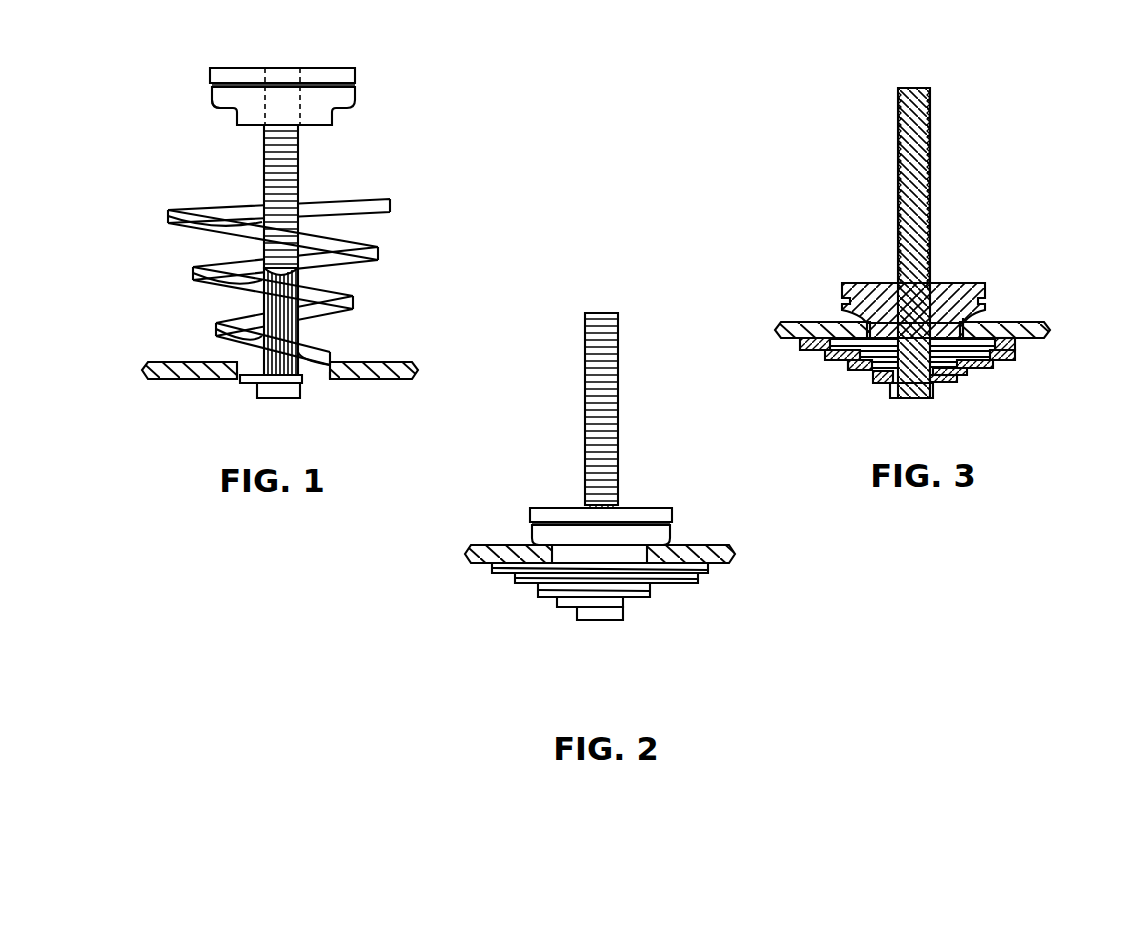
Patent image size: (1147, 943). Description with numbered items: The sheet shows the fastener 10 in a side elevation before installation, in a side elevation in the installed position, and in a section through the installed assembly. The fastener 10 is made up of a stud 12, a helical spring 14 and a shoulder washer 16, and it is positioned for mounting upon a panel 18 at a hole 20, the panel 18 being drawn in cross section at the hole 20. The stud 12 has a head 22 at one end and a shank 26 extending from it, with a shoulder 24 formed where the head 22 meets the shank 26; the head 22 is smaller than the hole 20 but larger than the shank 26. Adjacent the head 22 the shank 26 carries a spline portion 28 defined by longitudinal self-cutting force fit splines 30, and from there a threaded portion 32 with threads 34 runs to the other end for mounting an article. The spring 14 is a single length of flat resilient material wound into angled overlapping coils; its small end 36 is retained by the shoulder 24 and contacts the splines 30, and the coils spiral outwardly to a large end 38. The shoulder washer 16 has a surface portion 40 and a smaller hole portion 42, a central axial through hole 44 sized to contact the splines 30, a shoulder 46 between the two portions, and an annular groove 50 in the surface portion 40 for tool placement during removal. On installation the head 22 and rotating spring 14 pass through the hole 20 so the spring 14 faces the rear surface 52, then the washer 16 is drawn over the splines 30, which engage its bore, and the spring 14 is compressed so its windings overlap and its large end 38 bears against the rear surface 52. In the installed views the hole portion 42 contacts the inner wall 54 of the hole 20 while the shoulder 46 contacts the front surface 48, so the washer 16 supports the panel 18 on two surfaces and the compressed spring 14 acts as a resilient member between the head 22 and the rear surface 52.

In FIG. 1, the fastener 10 is at (412, 78).
In FIG. 1, the stud 12 is at (329, 191).
In FIG. 2, the stud 12 is at (612, 308).
In FIG. 3, the stud 12 is at (961, 229).
In FIG. 1, the spring 14 is at (272, 257).
In FIG. 2, the spring 14 is at (579, 609).
In FIG. 3, the spring 14 is at (818, 356).
In FIG. 1, the shoulder washer 16 is at (285, 91).
In FIG. 2, the shoulder washer 16 is at (674, 512).
In FIG. 3, the shoulder washer 16 is at (948, 278).
In FIG. 1, the panel 18 is at (305, 385).
In FIG. 2, the panel 18 is at (739, 553).
In FIG. 3, the panel 18 is at (912, 341).
In FIG. 1, the hole 20 is at (314, 379).
In FIG. 3, the hole 20 is at (848, 362).
In FIG. 1, the head 22 is at (276, 396).
In FIG. 2, the head 22 is at (576, 614).
In FIG. 3, the head 22 is at (912, 398).
In FIG. 1, the shoulder 24 is at (258, 387).
In FIG. 3, the shoulder 24 is at (940, 384).
In FIG. 1, the shank 26 is at (350, 270).
In FIG. 1, the spline portion 28 is at (300, 322).
In FIG. 1, the splines 30 is at (268, 300).
In FIG. 1, the threaded portion 32 is at (262, 150).
In FIG. 1, the threads 34 is at (300, 170).
In FIG. 3, the threads 34 is at (932, 166).
In FIG. 1, the small end 36 is at (238, 381).
In FIG. 2, the small end 36 is at (560, 607).
In FIG. 3, the small end 36 is at (892, 385).
In FIG. 1, the large end 38 is at (170, 202).
In FIG. 2, the large end 38 is at (490, 568).
In FIG. 3, the large end 38 is at (1022, 350).
In FIG. 1, the surface portion 40 is at (216, 88).
In FIG. 1, the hole portion 42 is at (238, 113).
In FIG. 3, the hole portion 42 is at (955, 330).
In FIG. 1, the central axial through hole 44 is at (283, 67).
In FIG. 1, the shoulder 46 is at (226, 108).
In FIG. 3, the shoulder 46 is at (983, 320).
In FIG. 1, the front surface 48 is at (395, 362).
In FIG. 3, the front surface 48 is at (1040, 333).
In FIG. 1, the annular groove 50 is at (358, 86).
In FIG. 1, the rear surface 52 is at (355, 381).
In FIG. 3, the rear surface 52 is at (790, 340).
In FIG. 1, the inner wall 54 is at (228, 363).
In FIG. 3, the inner wall 54 is at (873, 328).